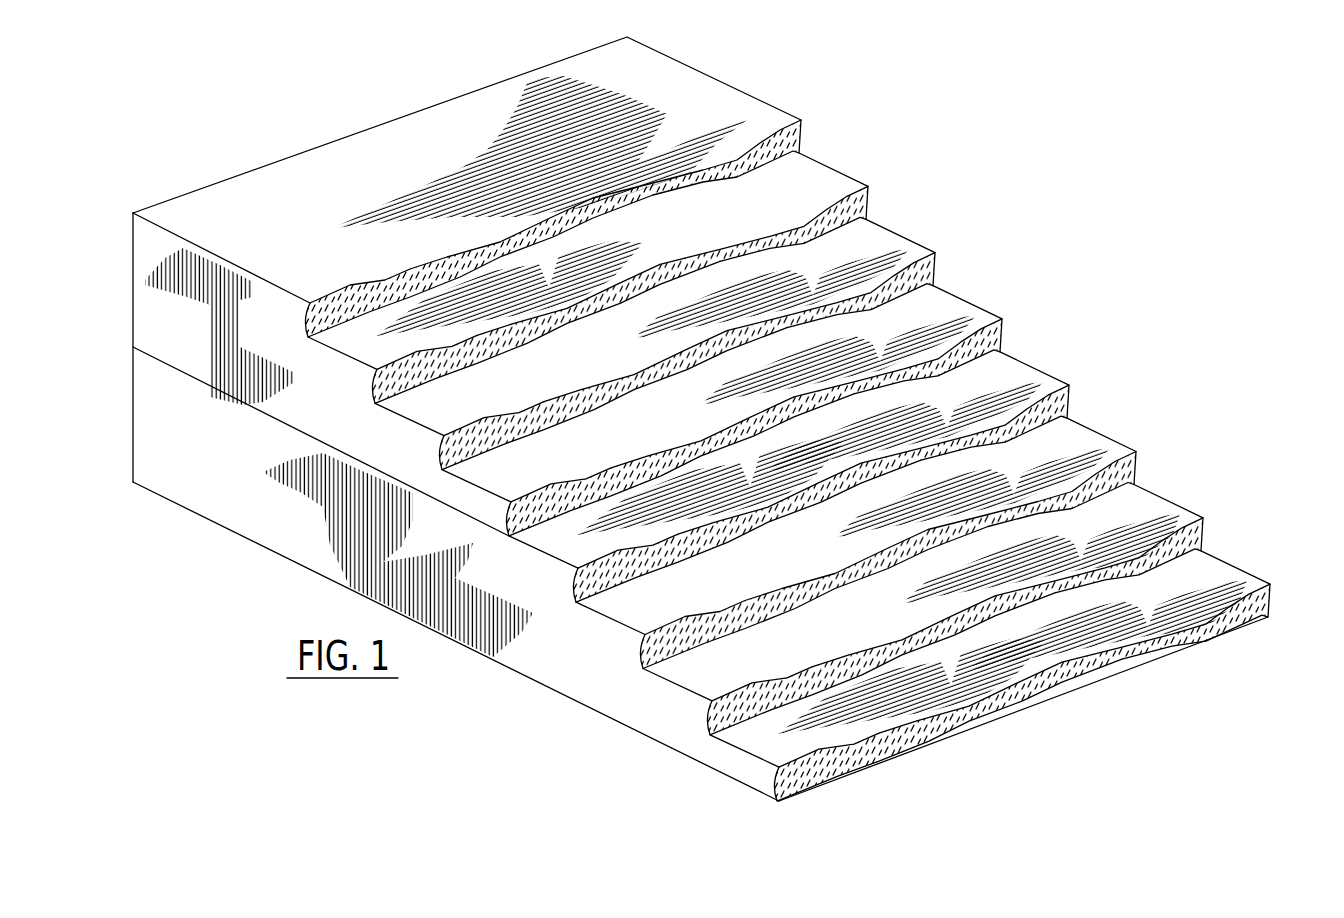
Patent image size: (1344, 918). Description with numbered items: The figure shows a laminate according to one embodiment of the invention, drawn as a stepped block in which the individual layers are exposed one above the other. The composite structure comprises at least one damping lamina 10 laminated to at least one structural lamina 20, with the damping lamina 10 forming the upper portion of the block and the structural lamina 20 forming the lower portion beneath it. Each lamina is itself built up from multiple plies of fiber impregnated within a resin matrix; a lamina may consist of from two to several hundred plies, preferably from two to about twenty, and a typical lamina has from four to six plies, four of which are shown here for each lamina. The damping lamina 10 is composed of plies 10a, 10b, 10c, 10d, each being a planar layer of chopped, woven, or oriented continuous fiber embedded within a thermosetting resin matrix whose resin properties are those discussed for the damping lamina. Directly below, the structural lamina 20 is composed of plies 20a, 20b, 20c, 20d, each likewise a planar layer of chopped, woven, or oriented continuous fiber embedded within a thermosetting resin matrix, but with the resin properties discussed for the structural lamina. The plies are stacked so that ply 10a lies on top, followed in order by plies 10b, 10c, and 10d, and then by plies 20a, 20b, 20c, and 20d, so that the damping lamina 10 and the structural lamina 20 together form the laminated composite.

The damping lamina 10 is at (125, 205).
The structural lamina 20 is at (125, 343).
The ply of the damping lamina 10a is at (586, 222).
The ply of the damping lamina 10b is at (653, 297).
The ply of the damping lamina 10c is at (720, 364).
The ply of the damping lamina 10d is at (787, 430).
The ply of the structural lamina 20a is at (854, 496).
The ply of the structural lamina 20b is at (921, 563).
The ply of the structural lamina 20c is at (988, 629).
The ply of the structural lamina 20d is at (1052, 679).